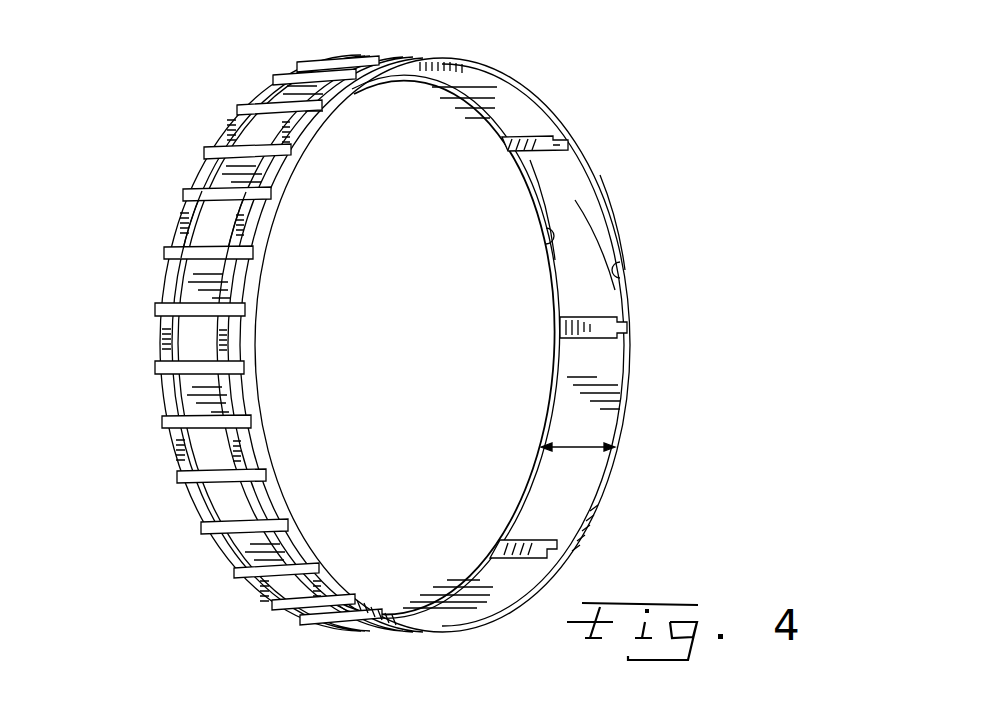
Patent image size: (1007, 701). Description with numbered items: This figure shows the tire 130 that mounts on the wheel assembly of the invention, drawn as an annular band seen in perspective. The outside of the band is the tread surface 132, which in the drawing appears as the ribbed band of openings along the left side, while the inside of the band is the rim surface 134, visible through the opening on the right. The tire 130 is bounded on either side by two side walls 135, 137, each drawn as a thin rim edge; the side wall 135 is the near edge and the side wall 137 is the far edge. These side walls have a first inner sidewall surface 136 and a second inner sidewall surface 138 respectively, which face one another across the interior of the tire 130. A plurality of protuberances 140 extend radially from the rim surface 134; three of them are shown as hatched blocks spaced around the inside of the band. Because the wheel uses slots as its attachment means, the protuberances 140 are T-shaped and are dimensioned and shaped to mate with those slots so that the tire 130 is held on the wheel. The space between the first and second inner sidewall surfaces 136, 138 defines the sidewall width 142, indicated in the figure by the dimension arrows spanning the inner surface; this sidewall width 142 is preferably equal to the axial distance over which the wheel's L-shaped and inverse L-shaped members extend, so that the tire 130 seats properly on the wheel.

The tire 130 is at (210, 566).
The tread surface 132 is at (212, 223).
The rim surface 134 is at (588, 207).
The side wall 135 is at (523, 194).
The first inner sidewall surface 136 is at (548, 233).
The side wall 137 is at (617, 224).
The second inner sidewall surface 138 is at (620, 263).
The protuberances 140 is at (548, 160).
The sidewall width 142 is at (575, 447).